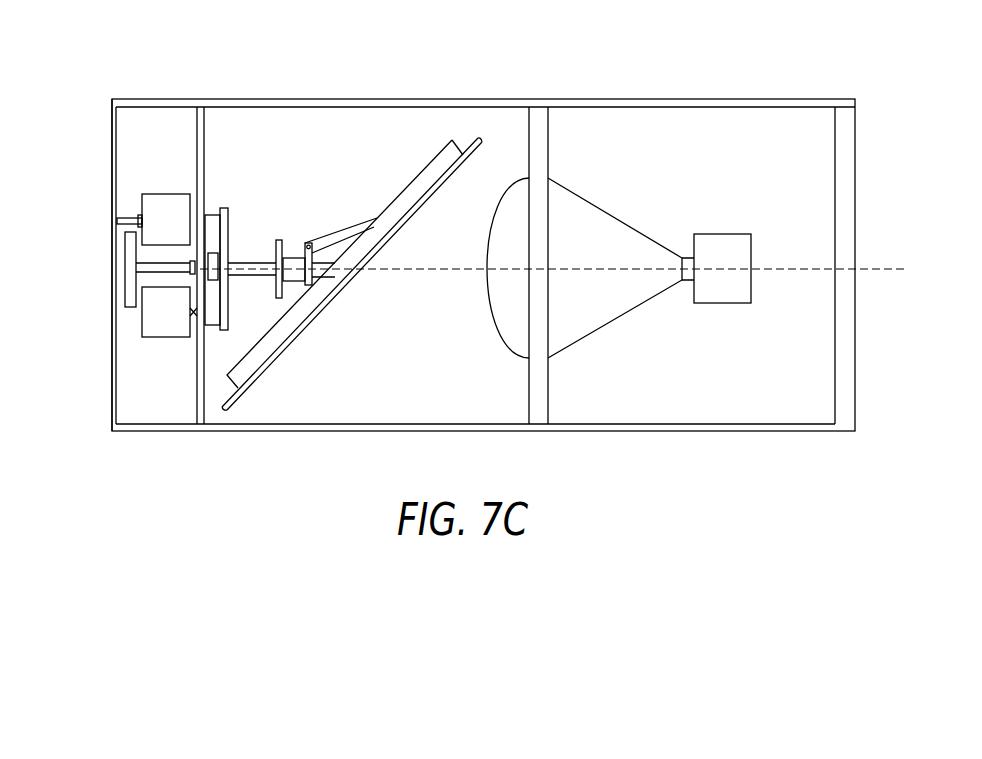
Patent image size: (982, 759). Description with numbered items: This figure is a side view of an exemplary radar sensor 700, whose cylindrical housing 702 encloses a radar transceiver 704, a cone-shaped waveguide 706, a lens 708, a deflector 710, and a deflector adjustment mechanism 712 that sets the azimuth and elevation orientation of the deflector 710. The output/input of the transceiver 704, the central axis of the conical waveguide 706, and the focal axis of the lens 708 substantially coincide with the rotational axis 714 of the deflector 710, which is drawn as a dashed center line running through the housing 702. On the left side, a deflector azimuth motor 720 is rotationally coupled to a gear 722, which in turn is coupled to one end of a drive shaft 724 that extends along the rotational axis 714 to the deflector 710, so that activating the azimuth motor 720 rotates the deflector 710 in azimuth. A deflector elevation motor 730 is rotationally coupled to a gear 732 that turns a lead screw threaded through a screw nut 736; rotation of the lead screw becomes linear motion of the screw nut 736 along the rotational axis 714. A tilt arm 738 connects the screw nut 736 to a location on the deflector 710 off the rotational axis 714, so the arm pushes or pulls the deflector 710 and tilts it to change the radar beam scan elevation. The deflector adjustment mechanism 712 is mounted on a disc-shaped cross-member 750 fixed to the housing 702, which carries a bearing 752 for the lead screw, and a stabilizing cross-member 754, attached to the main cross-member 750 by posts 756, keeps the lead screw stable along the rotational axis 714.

The radar sensor 700 is at (627, 70).
The cylindrical housing 702 is at (630, 432).
The radar transceiver 704 is at (740, 297).
The cone-shaped waveguide 706 is at (623, 257).
The lens 708 is at (488, 284).
The deflector 710 is at (315, 310).
The deflector adjustment mechanism 712 is at (67, 215).
The rotational axis 714 is at (803, 270).
The deflector azimuth motor 720 is at (167, 194).
The gear 722 is at (120, 268).
The drive shaft 724 is at (136, 303).
The deflector elevation motor 730 is at (167, 337).
The gear 732 is at (250, 262).
The screw nut 736 is at (305, 242).
The tilt arm 738 is at (347, 232).
The disc-shaped cross-member 750 is at (240, 432).
The bearing 752 is at (192, 264).
The stabilizing cross-member 754 is at (228, 210).
The posts 756 is at (213, 216).